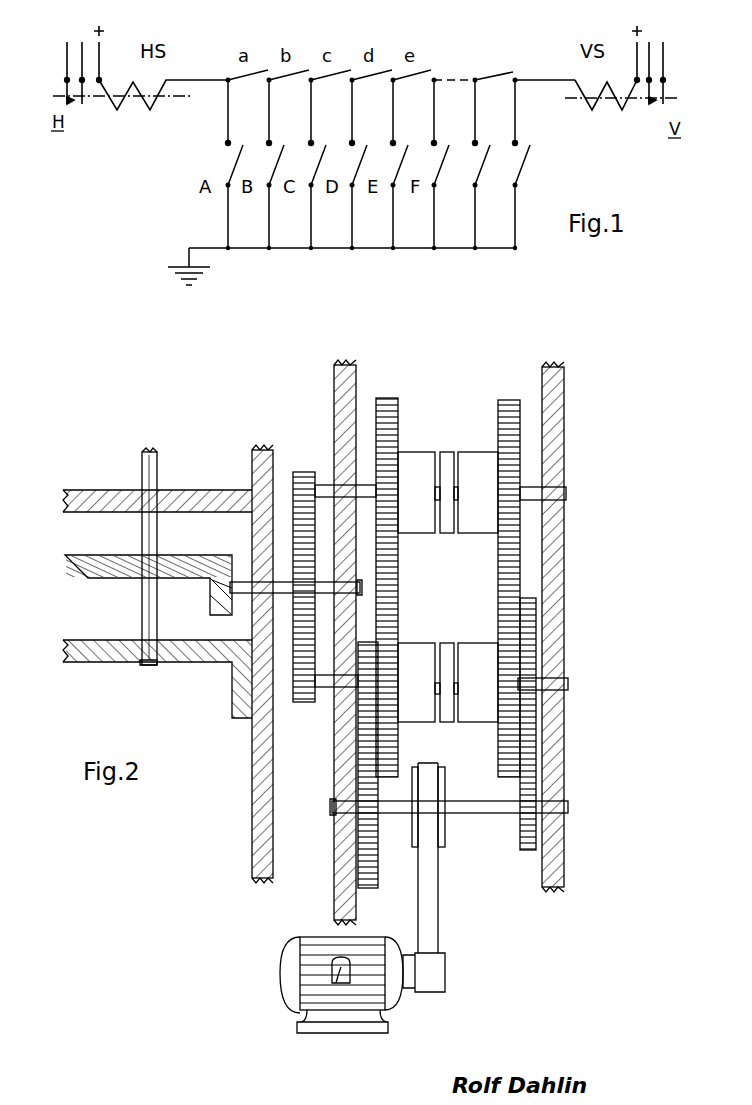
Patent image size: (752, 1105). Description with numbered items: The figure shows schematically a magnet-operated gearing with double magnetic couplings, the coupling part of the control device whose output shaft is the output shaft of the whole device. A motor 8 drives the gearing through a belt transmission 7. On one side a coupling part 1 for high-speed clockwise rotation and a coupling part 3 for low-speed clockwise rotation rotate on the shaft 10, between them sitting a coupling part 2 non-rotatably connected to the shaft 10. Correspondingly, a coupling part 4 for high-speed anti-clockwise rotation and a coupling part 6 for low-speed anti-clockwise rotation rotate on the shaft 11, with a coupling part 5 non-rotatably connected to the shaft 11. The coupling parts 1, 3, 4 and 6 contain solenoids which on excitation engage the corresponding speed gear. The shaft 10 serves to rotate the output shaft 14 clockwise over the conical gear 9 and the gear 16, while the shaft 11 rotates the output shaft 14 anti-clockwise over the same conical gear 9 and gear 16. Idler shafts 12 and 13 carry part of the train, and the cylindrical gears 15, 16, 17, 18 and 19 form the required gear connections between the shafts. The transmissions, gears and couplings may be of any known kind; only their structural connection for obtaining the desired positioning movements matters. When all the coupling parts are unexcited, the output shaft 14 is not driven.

The coupling part 1 is at (418, 458).
The coupling part 2 is at (452, 458).
The coupling part 3 is at (482, 458).
The coupling part 4 is at (418, 648).
The coupling part 5 is at (450, 648).
The coupling part 6 is at (482, 648).
The belt transmission 7 is at (433, 898).
The motor 8 is at (312, 940).
The conical gear 9 is at (103, 582).
The shaft 10 is at (563, 490).
The shaft 11 is at (565, 680).
The idler shaft 12 is at (567, 805).
The idler shaft 13 is at (242, 582).
The output shaft 14 is at (165, 550).
The cylindrical gear 15 is at (295, 650).
The cylindrical gear 16 is at (368, 888).
The cylindrical gear 17 is at (398, 568).
The cylindrical gear 18 is at (522, 574).
The cylindrical gear 19 is at (538, 753).